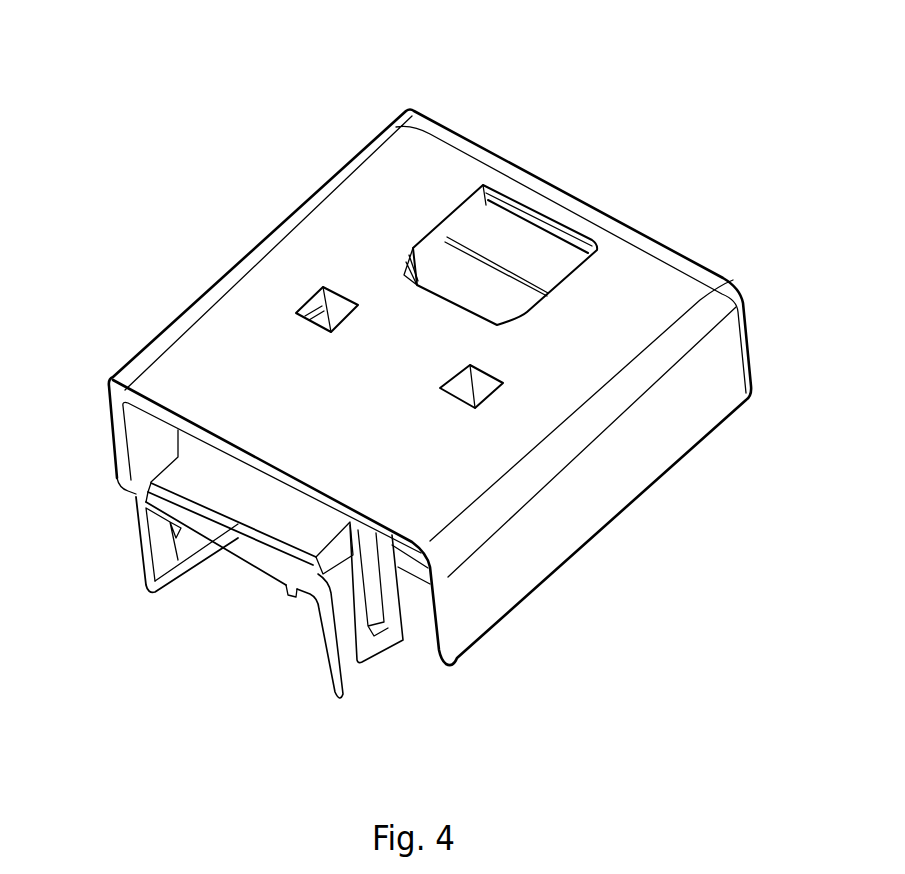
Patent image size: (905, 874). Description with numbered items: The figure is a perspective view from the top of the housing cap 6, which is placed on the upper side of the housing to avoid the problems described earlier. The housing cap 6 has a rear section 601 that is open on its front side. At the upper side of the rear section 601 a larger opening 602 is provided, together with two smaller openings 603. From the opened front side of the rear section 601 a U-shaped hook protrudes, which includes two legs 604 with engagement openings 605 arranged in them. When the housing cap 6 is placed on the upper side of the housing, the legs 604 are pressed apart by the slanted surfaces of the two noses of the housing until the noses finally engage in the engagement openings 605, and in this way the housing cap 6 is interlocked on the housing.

The housing cap 6 is at (460, 100).
The rear section 601 is at (653, 270).
The larger opening 602 is at (522, 237).
The smaller openings 603 is at (297, 317).
The legs 604 is at (138, 553).
The engagement openings 605 is at (183, 548).